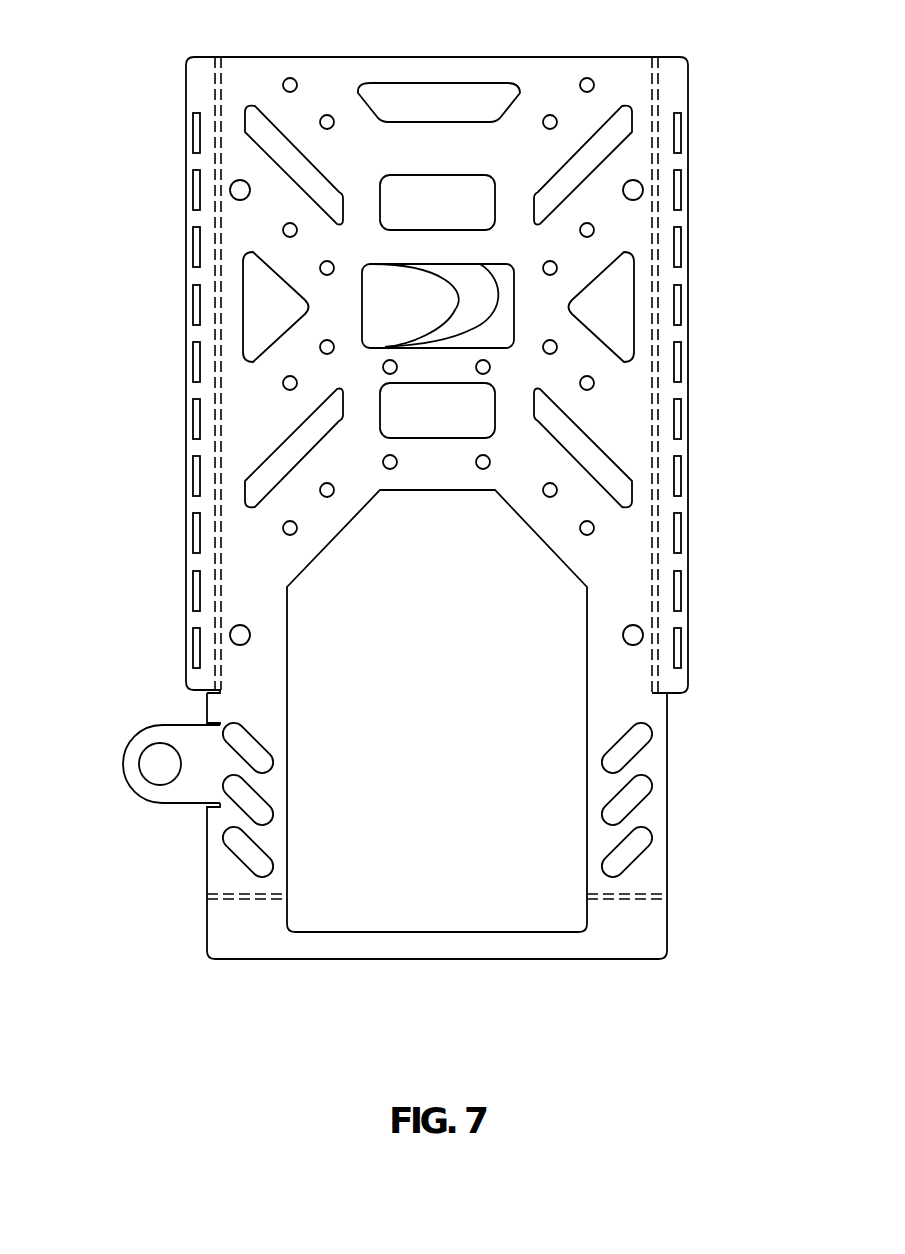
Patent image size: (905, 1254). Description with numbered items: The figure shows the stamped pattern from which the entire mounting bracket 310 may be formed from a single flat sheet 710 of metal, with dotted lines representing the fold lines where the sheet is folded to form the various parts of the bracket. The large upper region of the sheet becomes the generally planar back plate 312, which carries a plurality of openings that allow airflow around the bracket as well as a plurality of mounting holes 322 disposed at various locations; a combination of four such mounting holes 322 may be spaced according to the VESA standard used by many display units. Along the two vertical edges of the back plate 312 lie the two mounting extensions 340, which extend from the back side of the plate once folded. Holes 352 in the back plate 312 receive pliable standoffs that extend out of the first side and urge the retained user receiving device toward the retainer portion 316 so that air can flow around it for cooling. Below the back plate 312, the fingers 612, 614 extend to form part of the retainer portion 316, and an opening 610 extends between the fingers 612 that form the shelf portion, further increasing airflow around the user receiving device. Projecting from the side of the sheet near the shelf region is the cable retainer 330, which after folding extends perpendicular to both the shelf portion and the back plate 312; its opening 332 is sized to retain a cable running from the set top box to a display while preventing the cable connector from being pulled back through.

The mounting bracket 310 is at (92, 248).
The back plate 312 is at (642, 83).
The retainer portion 316 is at (297, 960).
The mounting holes 322 is at (324, 492).
The cable retainer 330 is at (148, 735).
The opening 332 is at (152, 770).
The mounting extensions 340 is at (190, 443).
The hole 352 is at (233, 185).
The opening 610 is at (460, 715).
The fingers 612 is at (217, 885).
The fingers 614 is at (640, 790).
The flat sheet 710 is at (240, 57).